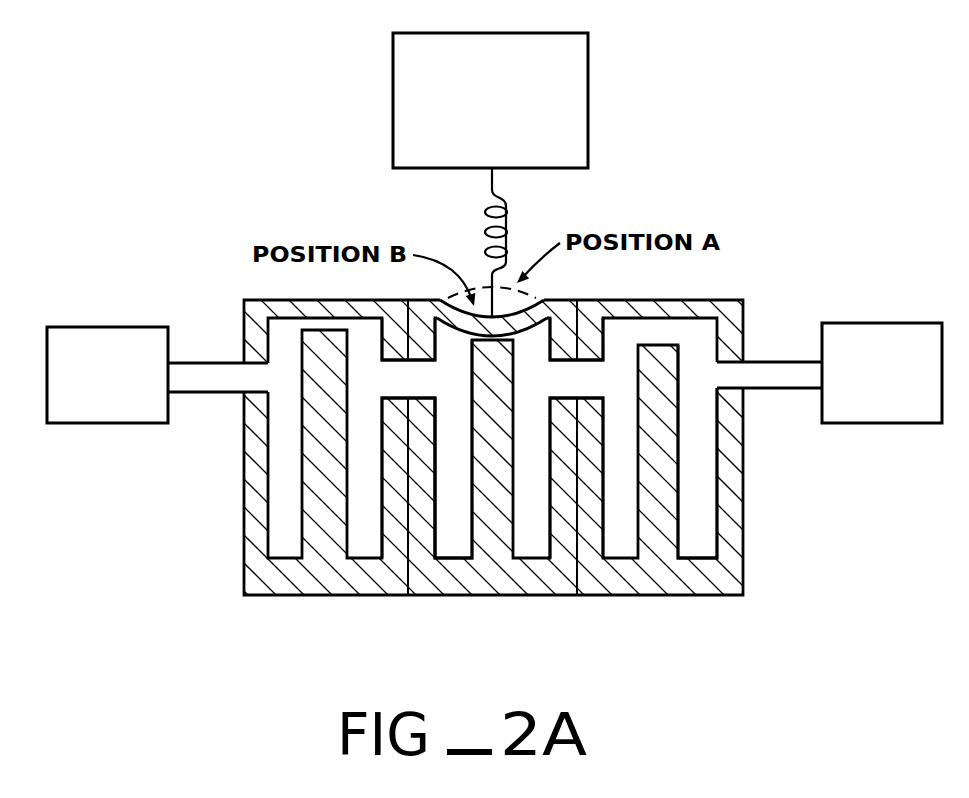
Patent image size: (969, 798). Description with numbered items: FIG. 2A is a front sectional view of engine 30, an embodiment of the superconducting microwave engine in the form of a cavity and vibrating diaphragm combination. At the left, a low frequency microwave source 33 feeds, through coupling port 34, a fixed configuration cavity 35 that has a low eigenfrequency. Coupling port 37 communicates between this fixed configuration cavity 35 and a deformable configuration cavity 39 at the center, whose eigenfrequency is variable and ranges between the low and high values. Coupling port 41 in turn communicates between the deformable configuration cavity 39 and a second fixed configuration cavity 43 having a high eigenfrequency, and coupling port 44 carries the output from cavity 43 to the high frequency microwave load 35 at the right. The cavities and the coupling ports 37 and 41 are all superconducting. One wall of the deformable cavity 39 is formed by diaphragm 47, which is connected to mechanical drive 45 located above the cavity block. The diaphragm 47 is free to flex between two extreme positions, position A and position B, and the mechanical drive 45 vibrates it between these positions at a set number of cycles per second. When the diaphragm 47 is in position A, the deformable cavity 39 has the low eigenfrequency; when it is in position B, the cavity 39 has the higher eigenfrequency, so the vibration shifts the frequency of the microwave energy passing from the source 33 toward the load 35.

The engine 30 is at (716, 145).
The low frequency microwave source 33 is at (122, 390).
The coupling port 34 is at (200, 373).
The fixed configuration cavity / high frequency microwave load 35 is at (900, 392).
The coupling port 37 is at (430, 388).
The deformable configuration cavity 39 is at (452, 543).
The coupling port 41 is at (599, 388).
The fixed configuration cavity 43 is at (705, 505).
The coupling port 44 is at (772, 370).
The mechanical drive 45 is at (490, 174).
The diaphragm 47 is at (532, 303).